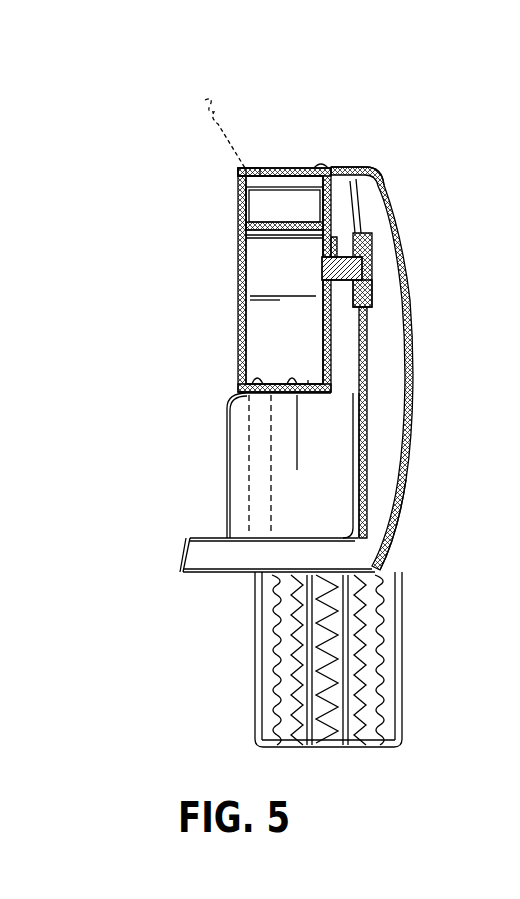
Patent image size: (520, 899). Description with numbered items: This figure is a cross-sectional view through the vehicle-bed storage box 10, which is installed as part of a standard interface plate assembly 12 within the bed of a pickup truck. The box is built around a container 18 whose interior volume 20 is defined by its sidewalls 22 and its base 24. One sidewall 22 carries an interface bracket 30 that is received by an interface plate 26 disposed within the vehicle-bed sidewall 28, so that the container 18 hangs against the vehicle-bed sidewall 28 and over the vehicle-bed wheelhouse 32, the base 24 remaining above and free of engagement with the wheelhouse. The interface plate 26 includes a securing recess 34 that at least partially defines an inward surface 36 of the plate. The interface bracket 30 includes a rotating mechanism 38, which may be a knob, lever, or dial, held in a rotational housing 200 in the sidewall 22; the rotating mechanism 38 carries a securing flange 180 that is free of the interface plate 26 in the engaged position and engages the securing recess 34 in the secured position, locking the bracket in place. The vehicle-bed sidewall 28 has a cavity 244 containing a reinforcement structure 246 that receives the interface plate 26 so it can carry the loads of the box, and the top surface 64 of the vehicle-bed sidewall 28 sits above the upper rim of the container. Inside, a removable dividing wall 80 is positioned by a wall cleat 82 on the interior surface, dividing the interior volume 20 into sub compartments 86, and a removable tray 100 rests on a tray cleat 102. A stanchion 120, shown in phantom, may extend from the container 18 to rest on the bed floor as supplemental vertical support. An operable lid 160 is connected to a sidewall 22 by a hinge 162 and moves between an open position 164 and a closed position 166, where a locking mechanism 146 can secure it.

The vehicle-bed storage box 10 is at (306, 101).
The standard interface plate assembly 12 is at (378, 221).
The container 18 is at (243, 318).
The interior volume 20 is at (273, 332).
The sidewalls 22 is at (245, 370).
The base 24 is at (250, 388).
The interface plate 26 is at (373, 170).
The vehicle-bed sidewall 28 is at (358, 386).
The interface bracket 30 is at (315, 272).
The vehicle-bed wheelhouse 32 is at (227, 450).
The securing recess 34 is at (365, 265).
The inward surface 36 is at (372, 238).
The rotating mechanism 38 is at (320, 250).
The top surface 64 is at (350, 167).
The removable dividing wall 80 is at (318, 397).
The wall cleat 82 is at (298, 445).
The sub compartments 86 is at (282, 296).
The removable tray 100 is at (272, 209).
The tray cleat 102 is at (272, 237).
The stanchion 120 is at (254, 497).
The locking mechanism 146 is at (318, 158).
The operable lid 160 is at (287, 168).
The hinge 162 is at (240, 175).
The open position 164 is at (206, 128).
The closed position 166 is at (263, 160).
The securing flange 180 is at (371, 298).
The rotational housing 200 is at (335, 306).
The cavity 244 is at (378, 483).
The reinforcement structure 246 is at (379, 306).